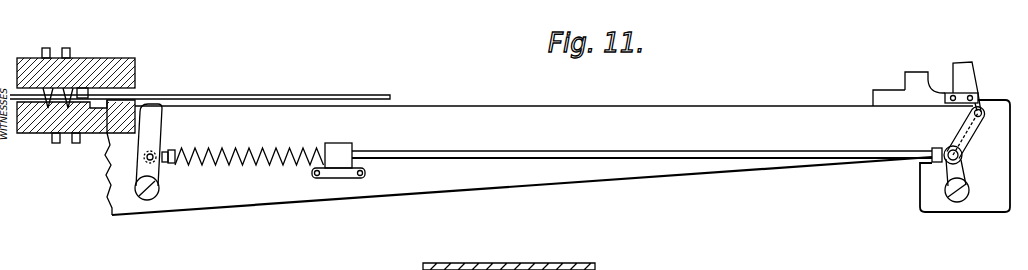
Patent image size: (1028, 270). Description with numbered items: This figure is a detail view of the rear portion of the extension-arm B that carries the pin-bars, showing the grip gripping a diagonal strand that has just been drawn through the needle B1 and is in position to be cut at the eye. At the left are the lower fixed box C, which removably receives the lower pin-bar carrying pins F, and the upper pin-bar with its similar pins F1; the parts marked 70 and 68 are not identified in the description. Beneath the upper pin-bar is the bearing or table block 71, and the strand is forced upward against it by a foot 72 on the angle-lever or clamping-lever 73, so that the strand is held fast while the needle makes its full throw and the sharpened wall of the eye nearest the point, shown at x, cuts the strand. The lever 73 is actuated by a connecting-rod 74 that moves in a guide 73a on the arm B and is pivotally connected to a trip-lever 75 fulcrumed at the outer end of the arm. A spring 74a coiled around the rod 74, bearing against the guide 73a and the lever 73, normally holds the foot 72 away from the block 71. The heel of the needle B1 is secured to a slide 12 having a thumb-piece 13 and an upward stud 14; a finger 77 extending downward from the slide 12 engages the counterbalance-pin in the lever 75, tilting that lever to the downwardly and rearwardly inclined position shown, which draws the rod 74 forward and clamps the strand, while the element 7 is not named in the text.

The upper pins F1 is at (46, 50).
The lower box C is at (88, 58).
The pins F is at (78, 145).
The bearing or table block 71 is at (100, 135).
The block part 70 is at (103, 110).
The needle B1 is at (200, 83).
The extension-arm B is at (554, 114).
The angle-lever 73 is at (162, 133).
The foot 72 is at (183, 75).
The hook end 68 is at (133, 97).
The cutting-section of the needle x is at (165, 100).
The spring 74a is at (248, 162).
The guide 73a is at (336, 166).
The connecting-rod 74 is at (503, 151).
The slide 12 is at (897, 96).
The stud 14 is at (907, 71).
The thumb-piece 13 is at (980, 84).
The guide body 7 is at (986, 113).
The finger 77 is at (974, 112).
The trip-lever 75 is at (972, 168).